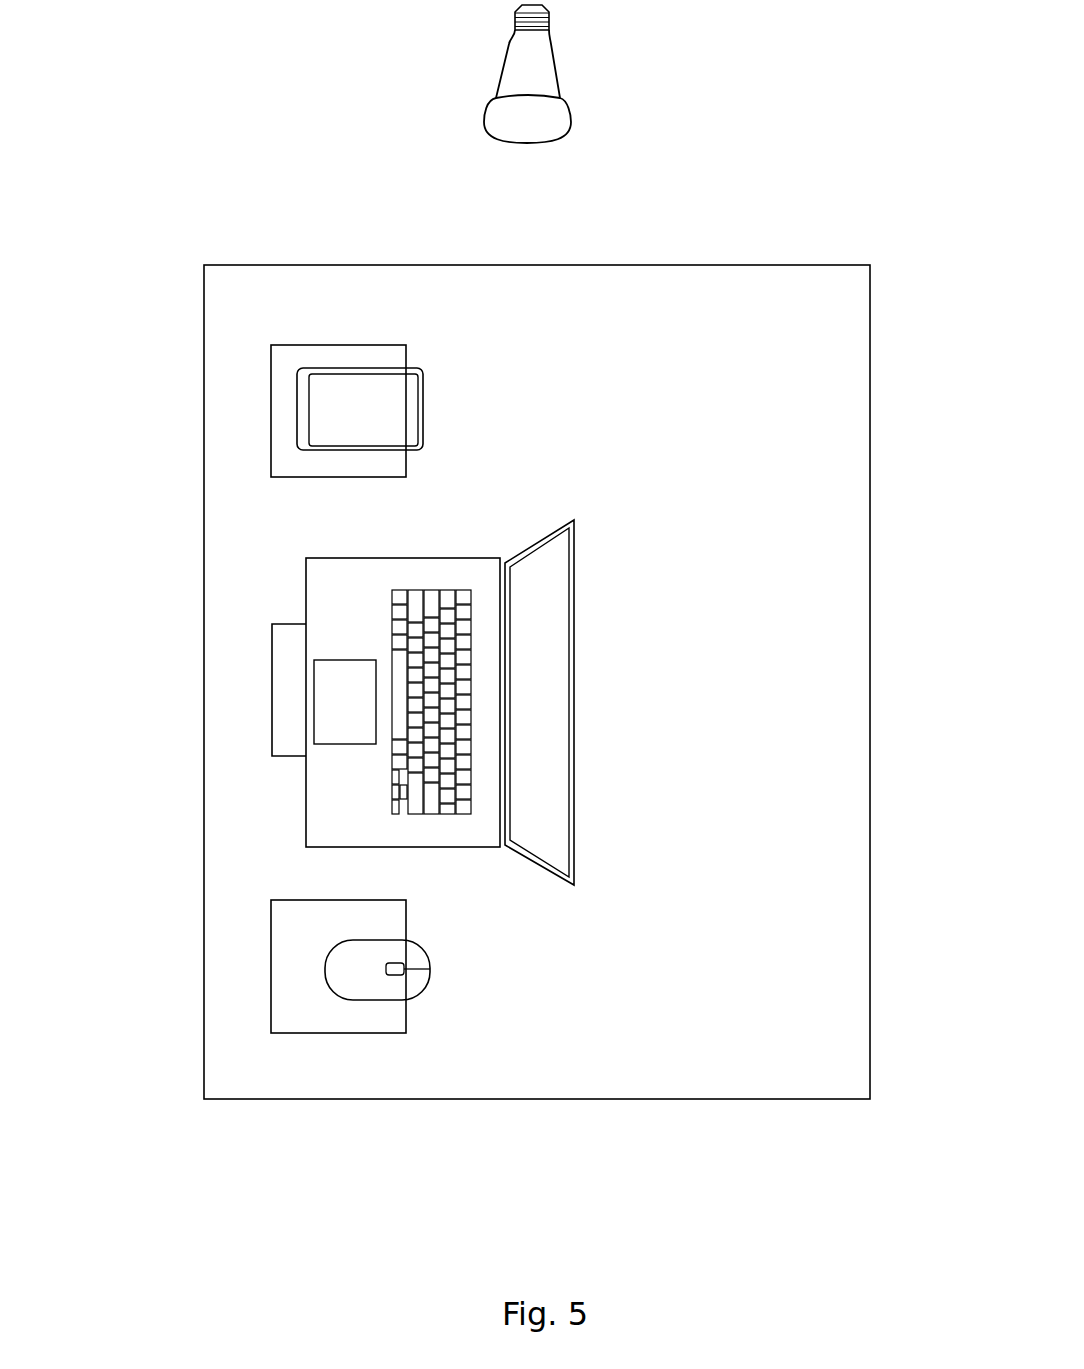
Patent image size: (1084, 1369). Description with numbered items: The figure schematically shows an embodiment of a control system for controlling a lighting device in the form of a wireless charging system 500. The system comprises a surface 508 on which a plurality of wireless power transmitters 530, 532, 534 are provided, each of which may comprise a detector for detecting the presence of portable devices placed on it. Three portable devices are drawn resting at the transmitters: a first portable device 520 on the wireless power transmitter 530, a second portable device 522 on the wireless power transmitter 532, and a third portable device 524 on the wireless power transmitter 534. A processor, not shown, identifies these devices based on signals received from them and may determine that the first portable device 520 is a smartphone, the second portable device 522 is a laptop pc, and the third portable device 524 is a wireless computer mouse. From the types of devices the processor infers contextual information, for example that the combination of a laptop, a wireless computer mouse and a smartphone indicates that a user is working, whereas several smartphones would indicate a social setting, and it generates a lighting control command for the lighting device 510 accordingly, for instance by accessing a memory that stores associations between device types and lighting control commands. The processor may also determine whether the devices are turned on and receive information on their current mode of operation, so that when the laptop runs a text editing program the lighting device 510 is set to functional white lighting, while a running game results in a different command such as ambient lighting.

The wireless charging system 500 is at (256, 220).
The surface 508 is at (786, 302).
The lighting device 510 is at (540, 60).
The first portable device 520 is at (370, 402).
The second portable device 522 is at (555, 713).
The third portable device 524 is at (413, 986).
The wireless power transmitter 530 is at (271, 431).
The wireless power transmitter 532 is at (272, 708).
The wireless power transmitter 534 is at (271, 967).